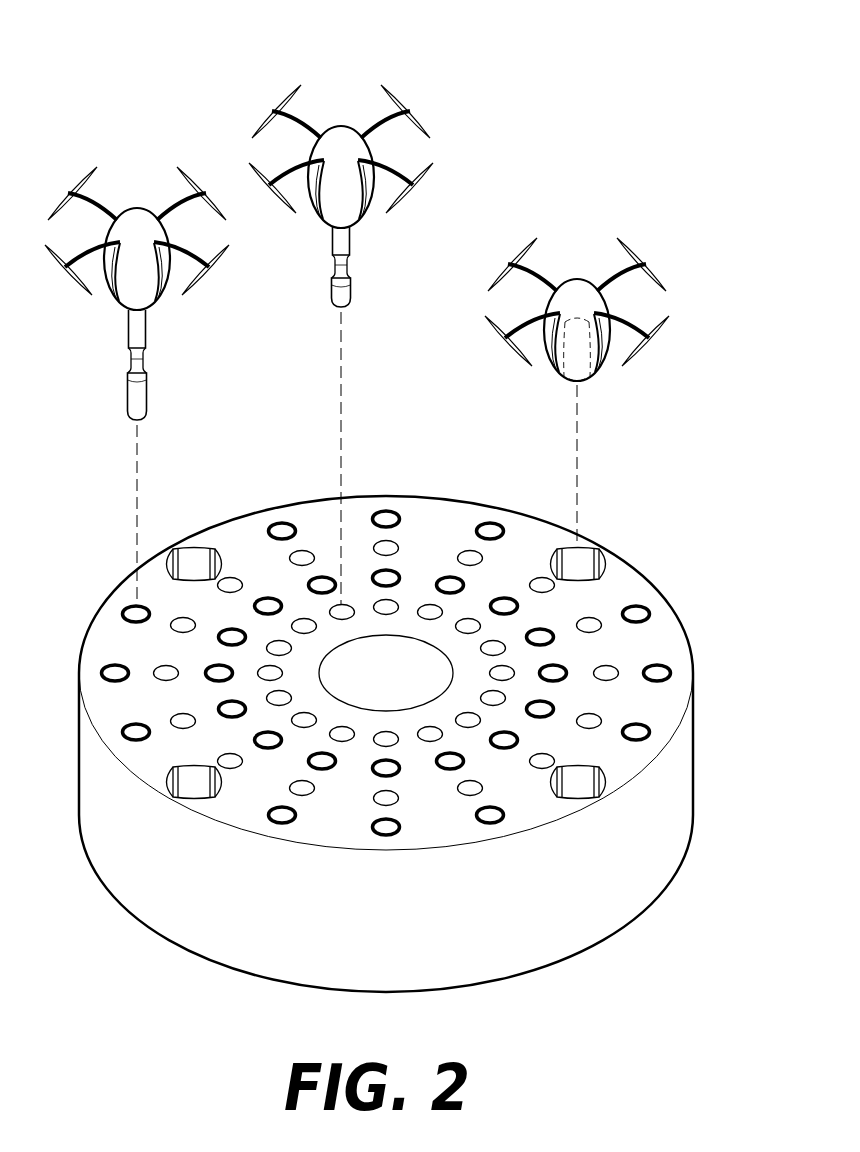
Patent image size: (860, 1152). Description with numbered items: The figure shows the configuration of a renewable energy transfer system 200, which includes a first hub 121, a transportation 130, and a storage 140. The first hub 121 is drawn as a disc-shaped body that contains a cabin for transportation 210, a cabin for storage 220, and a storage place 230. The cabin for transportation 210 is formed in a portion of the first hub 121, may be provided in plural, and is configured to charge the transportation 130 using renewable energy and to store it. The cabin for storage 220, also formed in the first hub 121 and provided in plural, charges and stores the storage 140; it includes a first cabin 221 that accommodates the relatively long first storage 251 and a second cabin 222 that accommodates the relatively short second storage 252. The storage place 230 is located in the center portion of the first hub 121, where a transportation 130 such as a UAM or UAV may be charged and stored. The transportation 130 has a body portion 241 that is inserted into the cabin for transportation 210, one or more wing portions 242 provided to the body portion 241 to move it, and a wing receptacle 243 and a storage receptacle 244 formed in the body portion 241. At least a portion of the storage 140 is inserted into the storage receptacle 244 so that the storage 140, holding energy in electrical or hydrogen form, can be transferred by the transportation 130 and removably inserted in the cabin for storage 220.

The renewable energy transfer system 200 is at (102, 49).
The first hub 121 is at (686, 770).
The transportation 130 is at (616, 369).
The storage 140 is at (239, 345).
The cabin for transportation 210 is at (597, 551).
The cabin for storage 220 is at (386, 614).
The first cabin 221 is at (138, 606).
The second cabin 222 is at (341, 605).
The storage place 230 is at (410, 662).
The body portion 241 is at (577, 286).
The wing portion 242 is at (643, 260).
The wing receptacle 243 is at (603, 363).
The storage receptacle 244 is at (598, 462).
The first storage 251 is at (146, 333).
The second storage 252 is at (328, 297).